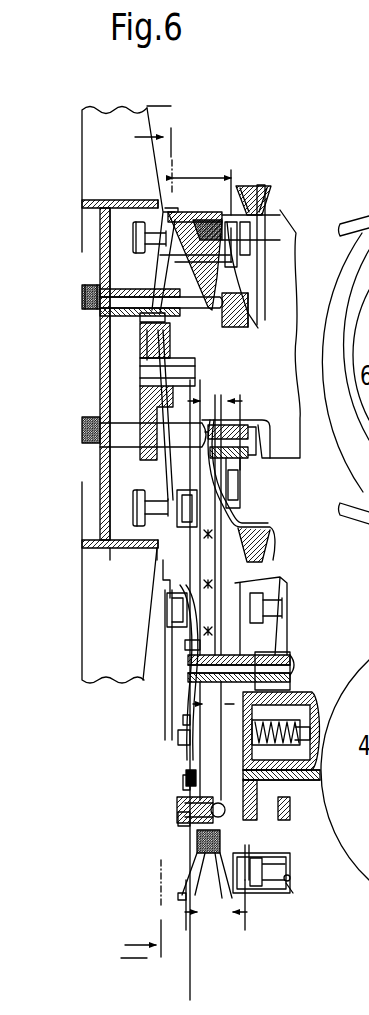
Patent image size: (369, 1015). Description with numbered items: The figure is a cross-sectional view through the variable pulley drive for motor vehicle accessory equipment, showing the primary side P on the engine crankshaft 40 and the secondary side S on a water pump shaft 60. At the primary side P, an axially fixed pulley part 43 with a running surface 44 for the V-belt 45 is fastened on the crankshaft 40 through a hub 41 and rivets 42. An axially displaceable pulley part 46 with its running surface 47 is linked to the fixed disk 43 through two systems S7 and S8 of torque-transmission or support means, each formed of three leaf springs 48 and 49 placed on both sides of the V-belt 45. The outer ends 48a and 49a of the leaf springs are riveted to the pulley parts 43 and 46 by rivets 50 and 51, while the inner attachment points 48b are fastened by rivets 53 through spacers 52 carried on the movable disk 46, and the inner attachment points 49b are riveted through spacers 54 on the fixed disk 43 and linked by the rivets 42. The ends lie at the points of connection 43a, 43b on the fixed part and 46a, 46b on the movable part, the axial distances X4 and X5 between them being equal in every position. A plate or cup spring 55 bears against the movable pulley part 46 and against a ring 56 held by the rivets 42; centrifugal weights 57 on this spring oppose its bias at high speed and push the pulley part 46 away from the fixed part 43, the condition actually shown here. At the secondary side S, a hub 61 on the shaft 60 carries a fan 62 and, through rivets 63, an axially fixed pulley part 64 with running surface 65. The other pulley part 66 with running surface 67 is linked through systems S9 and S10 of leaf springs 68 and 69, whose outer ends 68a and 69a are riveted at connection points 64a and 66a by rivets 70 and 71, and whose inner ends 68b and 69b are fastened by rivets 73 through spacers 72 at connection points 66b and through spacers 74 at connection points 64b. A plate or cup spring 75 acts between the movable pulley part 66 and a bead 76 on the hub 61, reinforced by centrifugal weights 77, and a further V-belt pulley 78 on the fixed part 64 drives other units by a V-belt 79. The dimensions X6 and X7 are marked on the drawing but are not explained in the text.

The crankshaft 40 is at (307, 718).
The hub 41 is at (302, 782).
The rivets 42 is at (190, 648).
The axially fixed pulley part 43 is at (182, 888).
The points of connection 43a is at (173, 637).
The points of connection 43b is at (213, 663).
The running surface 44 is at (184, 895).
The V-belt 45 is at (200, 222).
The axially displaceable pulley part 46 is at (250, 893).
The points of connection 46a is at (236, 900).
The points of connection 46b is at (188, 778).
The running surface 47 is at (233, 855).
The leaf springs 48 is at (187, 719).
The attachment points or ends 48a is at (167, 626).
The attachment points 48b is at (177, 736).
The leaf springs 49 is at (290, 679).
The attachment points or ends 49a is at (249, 900).
The attachment points 49b is at (224, 668).
The rivets 50 is at (180, 608).
The rivets 51 is at (289, 884).
The spacers 52 is at (192, 827).
The rivets 53 is at (187, 805).
The spacers 54 is at (202, 686).
The plate or cup spring 55 is at (288, 888).
The ring 56 is at (287, 658).
The centrifugal weights 57 is at (267, 601).
The water pump shaft 60 is at (167, 373).
The hub 61 is at (147, 350).
The fan 62 is at (108, 243).
The rivets 63 is at (92, 308).
The axially fixed pulley part 64 is at (178, 272).
The points of connection 64a is at (250, 322).
The points of connection 64b is at (102, 288).
The running surface 65 is at (213, 232).
The axially movable pulley part 66 is at (187, 268).
The points of connection 66a is at (217, 510).
The points of connection 66b is at (140, 447).
The running surface 67 is at (160, 207).
The leaf springs 68 is at (240, 258).
The attachment points or ends 68a is at (243, 250).
The attachment points 68b is at (242, 462).
The leaf springs 69 is at (200, 273).
The attachment points or ends 69a is at (180, 545).
The attachment points or ends 69b is at (147, 313).
The rivets 70 is at (238, 240).
The rivets 71 is at (126, 547).
The spacers 72 is at (247, 457).
The rivets 73 is at (248, 441).
The spacers 74 is at (203, 330).
The plate or cup spring 75 is at (136, 222).
The bead 76 is at (141, 340).
The centrifugal weights 77 is at (120, 213).
The V-belt pulley 78 is at (264, 193).
The V-belt 79 is at (252, 185).
The secondary side S is at (84, 374).
The system of torque-transmission means S7 is at (190, 690).
The system of torque-transmission means S8 is at (260, 836).
The system of torque-transmission means S9 is at (253, 274).
The system of torque-transmission means S10 is at (177, 331).
The primary side P is at (134, 814).
The axial distance X4 is at (213, 706).
The axial distance X5 is at (216, 905).
The dimension X6 is at (202, 180).
The dimension X7 is at (215, 427).